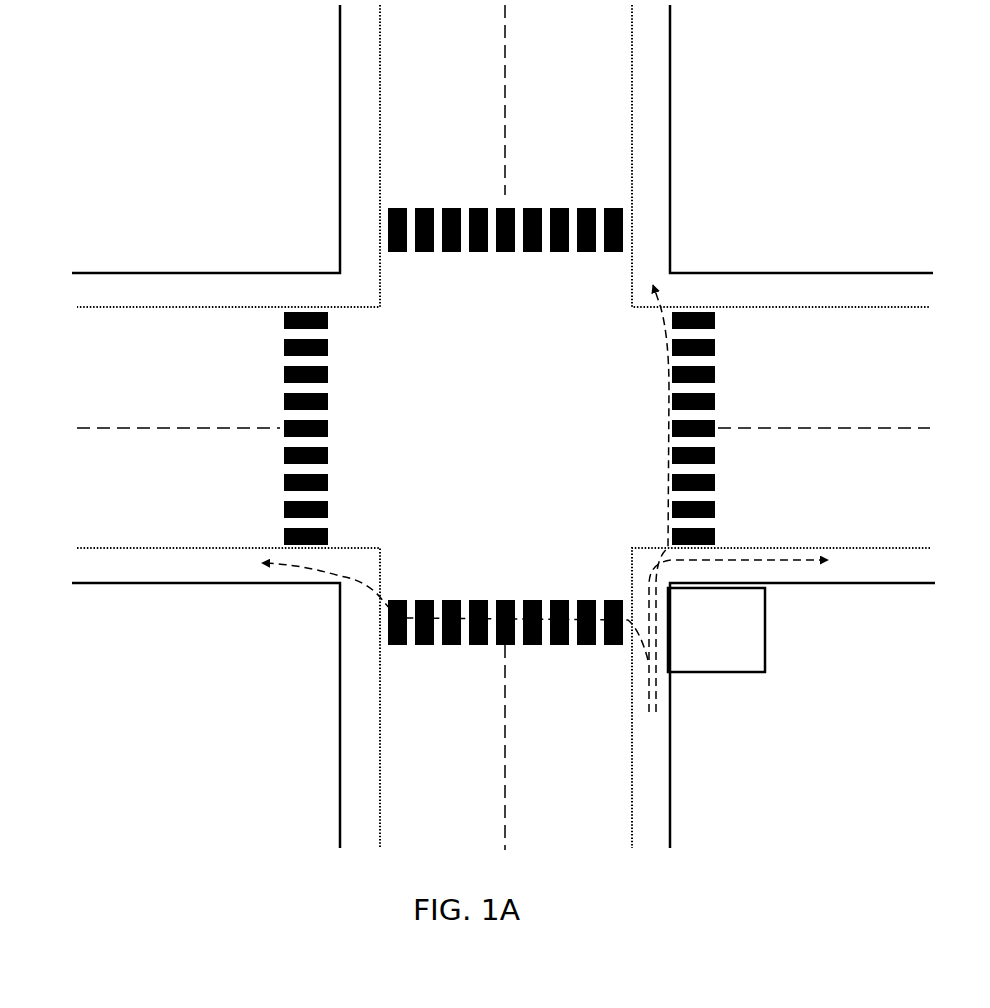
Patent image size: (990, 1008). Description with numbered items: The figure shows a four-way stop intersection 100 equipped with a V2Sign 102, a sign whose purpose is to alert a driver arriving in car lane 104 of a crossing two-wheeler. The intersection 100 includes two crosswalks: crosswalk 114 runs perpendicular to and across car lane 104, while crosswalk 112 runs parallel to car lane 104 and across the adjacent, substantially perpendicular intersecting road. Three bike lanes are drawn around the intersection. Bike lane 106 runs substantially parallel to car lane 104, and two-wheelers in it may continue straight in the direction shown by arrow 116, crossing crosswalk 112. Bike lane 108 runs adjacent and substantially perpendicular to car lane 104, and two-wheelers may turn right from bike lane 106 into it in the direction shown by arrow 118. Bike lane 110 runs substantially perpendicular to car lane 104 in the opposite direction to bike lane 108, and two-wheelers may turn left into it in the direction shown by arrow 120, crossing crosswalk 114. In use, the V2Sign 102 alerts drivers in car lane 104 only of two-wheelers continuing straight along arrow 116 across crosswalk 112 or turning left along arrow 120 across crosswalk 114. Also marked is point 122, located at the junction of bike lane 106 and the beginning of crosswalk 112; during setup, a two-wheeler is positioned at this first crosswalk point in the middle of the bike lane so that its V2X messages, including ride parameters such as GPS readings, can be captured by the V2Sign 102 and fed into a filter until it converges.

The intersection 100 is at (453, 376).
The V2Sign 102 is at (716, 630).
The car lane 104 is at (555, 747).
The bike lane 106 is at (654, 740).
The bike lane 108 is at (826, 574).
The bike lane 110 is at (192, 574).
The crosswalk 112 is at (724, 453).
The crosswalk 114 is at (463, 649).
The arrow 116 is at (660, 311).
The arrow 118 is at (793, 560).
The arrow 120 is at (340, 576).
The point 122 is at (663, 544).